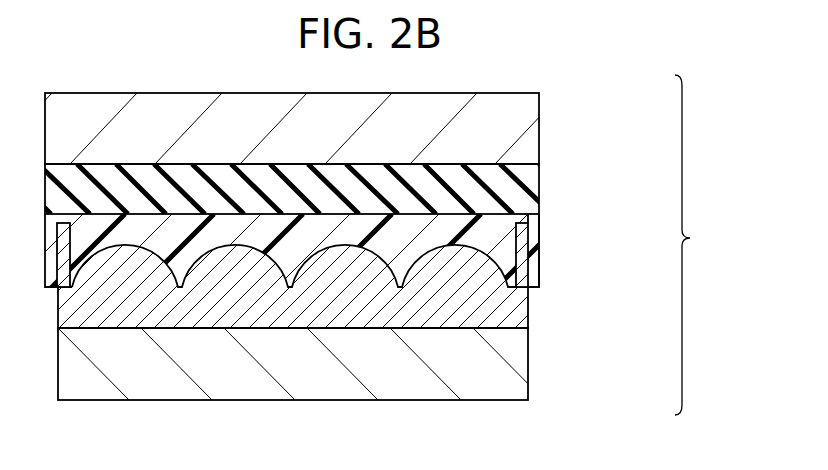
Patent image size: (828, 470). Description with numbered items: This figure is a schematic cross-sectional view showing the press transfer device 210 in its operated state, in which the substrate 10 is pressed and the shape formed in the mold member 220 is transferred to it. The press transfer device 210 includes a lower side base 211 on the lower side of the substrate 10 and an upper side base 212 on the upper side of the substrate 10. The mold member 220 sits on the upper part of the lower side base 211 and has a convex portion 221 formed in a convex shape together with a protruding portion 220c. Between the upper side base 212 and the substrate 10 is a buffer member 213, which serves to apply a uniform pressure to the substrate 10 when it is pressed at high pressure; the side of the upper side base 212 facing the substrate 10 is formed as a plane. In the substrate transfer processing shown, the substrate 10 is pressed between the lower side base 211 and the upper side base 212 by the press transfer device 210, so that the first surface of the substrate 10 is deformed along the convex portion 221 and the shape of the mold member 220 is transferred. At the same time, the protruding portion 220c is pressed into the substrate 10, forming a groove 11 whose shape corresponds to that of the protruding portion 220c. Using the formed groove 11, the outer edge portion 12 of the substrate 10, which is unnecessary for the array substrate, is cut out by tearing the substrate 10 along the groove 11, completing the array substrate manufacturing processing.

The press transfer device 210 is at (702, 245).
The lower side base 211 is at (515, 375).
The upper side base 212 is at (530, 132).
The buffer member 213 is at (530, 178).
The substrate 10 is at (505, 227).
The groove 11 is at (520, 257).
The outer edge portion 12 is at (530, 235).
The mold member 220 is at (500, 313).
The protruding portion 220c is at (522, 277).
The convex portion 221 is at (478, 270).